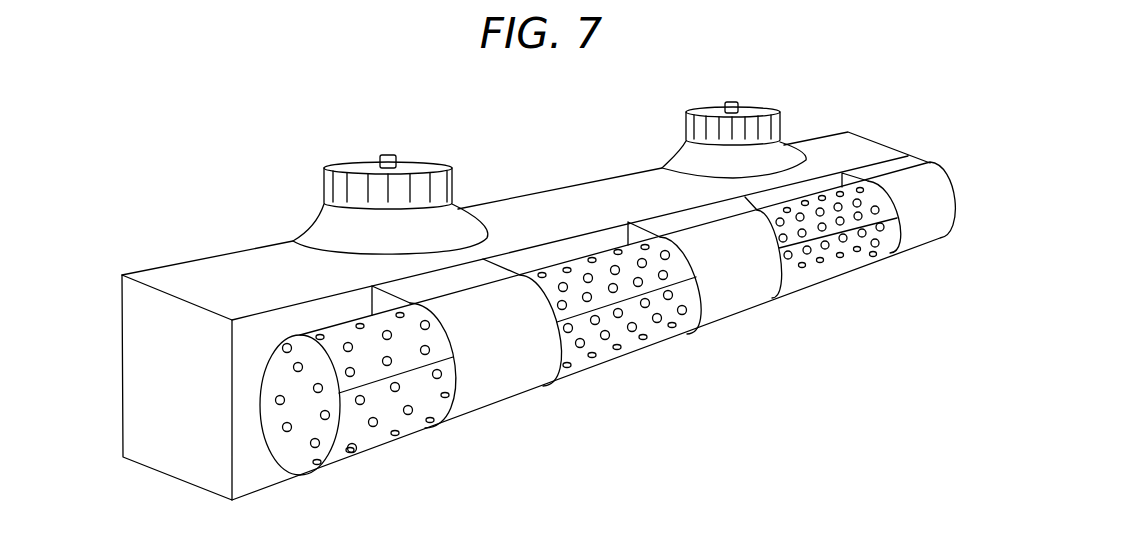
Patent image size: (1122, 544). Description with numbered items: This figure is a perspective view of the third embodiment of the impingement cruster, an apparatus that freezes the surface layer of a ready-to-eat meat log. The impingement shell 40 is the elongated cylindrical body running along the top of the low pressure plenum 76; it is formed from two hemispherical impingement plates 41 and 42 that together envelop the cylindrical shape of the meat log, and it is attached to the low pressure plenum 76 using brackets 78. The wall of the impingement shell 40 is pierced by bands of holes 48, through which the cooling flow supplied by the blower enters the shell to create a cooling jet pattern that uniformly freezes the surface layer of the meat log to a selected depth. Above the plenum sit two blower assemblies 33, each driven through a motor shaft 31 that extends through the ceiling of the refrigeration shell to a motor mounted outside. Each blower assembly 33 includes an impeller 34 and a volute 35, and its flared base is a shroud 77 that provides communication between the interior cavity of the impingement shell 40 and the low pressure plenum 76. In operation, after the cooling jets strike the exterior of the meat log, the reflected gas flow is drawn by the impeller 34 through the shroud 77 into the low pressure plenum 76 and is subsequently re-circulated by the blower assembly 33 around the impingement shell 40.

The motor shaft 31 is at (388, 153).
The blower assembly 33 is at (548, 157).
The impeller 34 is at (422, 183).
The volute 35 is at (452, 228).
The impingement shell 40 is at (662, 346).
The hemispherical impingement plate 41 is at (327, 355).
The hemispherical impingement plate 42 is at (373, 440).
The holes 48 is at (618, 253).
The low pressure plenum 76 is at (139, 338).
The shroud 77 is at (410, 288).
The brackets 78 is at (498, 364).